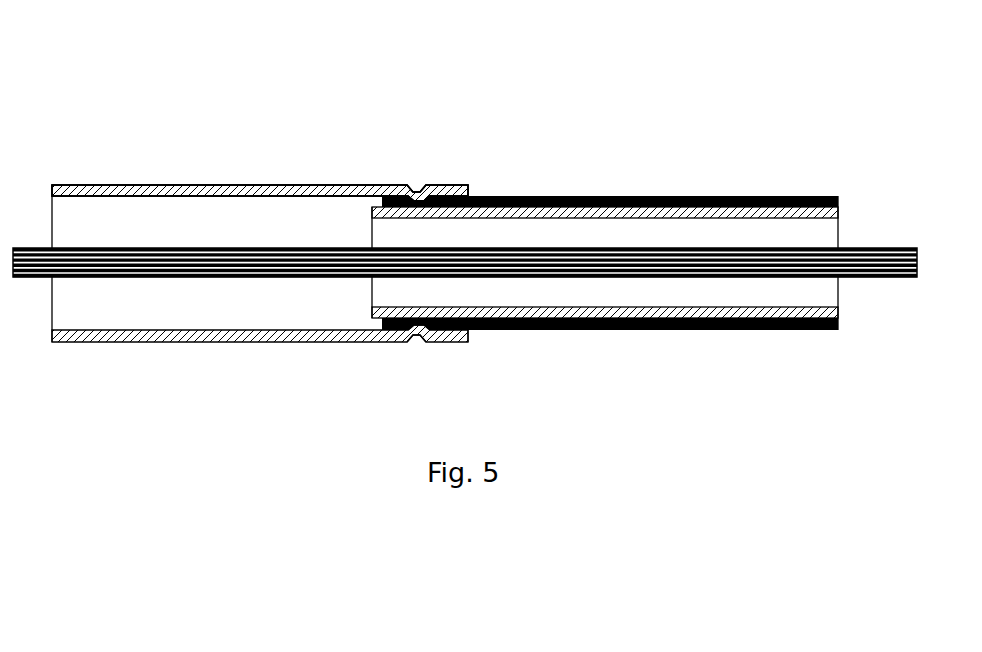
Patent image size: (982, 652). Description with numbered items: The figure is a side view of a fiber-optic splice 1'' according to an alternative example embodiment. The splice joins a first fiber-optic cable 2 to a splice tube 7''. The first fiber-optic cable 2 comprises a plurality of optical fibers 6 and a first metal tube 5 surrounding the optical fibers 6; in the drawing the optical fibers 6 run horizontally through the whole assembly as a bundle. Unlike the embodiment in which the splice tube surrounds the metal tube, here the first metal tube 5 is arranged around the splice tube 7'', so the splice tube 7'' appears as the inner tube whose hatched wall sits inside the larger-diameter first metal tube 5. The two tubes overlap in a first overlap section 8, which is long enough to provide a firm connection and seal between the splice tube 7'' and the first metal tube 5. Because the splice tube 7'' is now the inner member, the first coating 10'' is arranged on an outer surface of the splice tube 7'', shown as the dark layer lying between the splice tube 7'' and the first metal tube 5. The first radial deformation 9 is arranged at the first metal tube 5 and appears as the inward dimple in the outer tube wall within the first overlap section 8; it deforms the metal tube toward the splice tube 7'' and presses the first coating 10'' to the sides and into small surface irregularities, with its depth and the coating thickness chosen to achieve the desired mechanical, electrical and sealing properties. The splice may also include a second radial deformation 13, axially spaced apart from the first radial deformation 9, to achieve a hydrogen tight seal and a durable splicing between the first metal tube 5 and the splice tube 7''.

The fiber-optic splice 1'' is at (461, 227).
The first metal tube 5 is at (106, 184).
The first fiber-optic cable 2 is at (229, 162).
The second radial deformation 13 is at (291, 152).
The first coating 10'' is at (605, 238).
The splice tube 7'' is at (610, 227).
The first radial deformation 9 is at (412, 348).
The first overlap section 8 is at (473, 358).
The optical fibers 6 is at (45, 278).